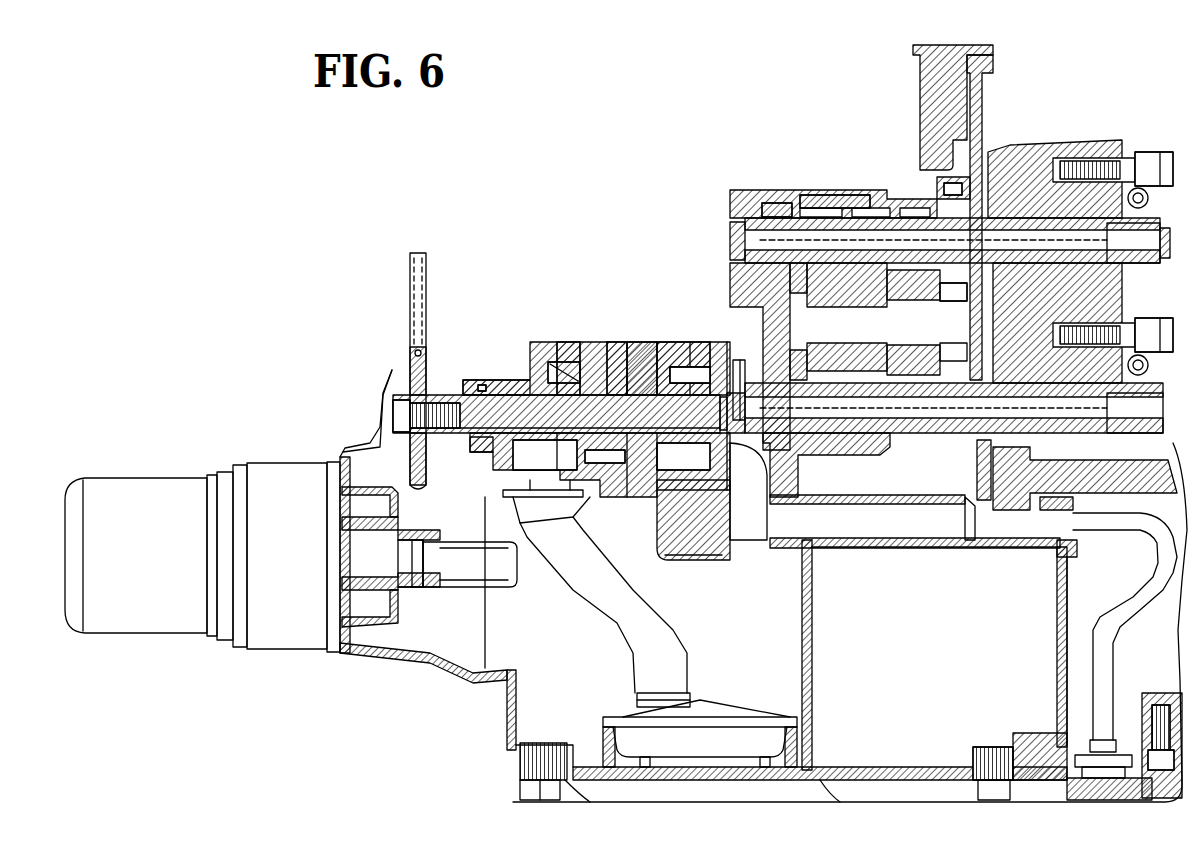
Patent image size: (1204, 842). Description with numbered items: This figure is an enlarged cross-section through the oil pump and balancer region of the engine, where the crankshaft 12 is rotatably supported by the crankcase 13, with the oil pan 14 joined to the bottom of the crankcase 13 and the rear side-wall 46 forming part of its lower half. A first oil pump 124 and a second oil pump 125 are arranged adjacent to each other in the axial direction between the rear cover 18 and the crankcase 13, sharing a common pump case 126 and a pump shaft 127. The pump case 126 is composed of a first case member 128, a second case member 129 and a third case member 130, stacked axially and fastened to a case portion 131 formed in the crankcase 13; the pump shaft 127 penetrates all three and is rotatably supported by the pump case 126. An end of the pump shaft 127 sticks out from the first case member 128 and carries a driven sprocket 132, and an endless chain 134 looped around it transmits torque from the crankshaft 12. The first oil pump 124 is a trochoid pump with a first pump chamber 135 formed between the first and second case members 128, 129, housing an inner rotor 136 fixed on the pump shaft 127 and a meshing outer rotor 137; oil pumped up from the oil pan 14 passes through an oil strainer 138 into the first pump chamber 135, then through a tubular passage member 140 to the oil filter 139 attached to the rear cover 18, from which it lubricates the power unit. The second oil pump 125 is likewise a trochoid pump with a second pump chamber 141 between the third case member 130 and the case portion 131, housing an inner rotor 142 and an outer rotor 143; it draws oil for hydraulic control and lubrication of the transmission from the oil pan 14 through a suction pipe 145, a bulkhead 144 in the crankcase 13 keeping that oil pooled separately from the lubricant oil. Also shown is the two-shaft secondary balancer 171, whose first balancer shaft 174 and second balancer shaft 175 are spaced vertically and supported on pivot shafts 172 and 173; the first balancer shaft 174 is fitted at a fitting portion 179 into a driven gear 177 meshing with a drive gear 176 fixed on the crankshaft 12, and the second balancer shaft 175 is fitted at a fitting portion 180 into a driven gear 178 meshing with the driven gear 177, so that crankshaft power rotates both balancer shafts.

The crankshaft 12 is at (918, 94).
The crankcase 13 is at (797, 600).
The oil pan 14 is at (843, 767).
The rear cover 18 is at (437, 672).
The rear side-wall 46 is at (500, 702).
The first oil pump 124 is at (585, 337).
The second oil pump 125 is at (715, 337).
The pump case 126 is at (688, 565).
The pump shaft 127 is at (502, 387).
The first case member 128 is at (523, 350).
The second case member 129 is at (643, 342).
The third case member 130 is at (716, 566).
The case portion 131 is at (750, 345).
The driven sprocket 132 is at (432, 457).
The endless chain 134 is at (408, 330).
The first pump chamber 135 is at (576, 523).
The inner rotor 136 is at (553, 342).
The outer rotor 137 is at (593, 472).
The oil strainer 138 is at (700, 727).
The oil filter 139 is at (166, 566).
The tubular passage member 140 is at (500, 592).
The second pump chamber 141 is at (780, 494).
The inner rotor 142 is at (655, 342).
The outer rotor 143 is at (687, 343).
The bulkhead 144 is at (813, 662).
The suction pipe 145 is at (1103, 702).
The balancer 171 is at (878, 183).
The pivot shaft 172 is at (784, 200).
The pivot shaft 173 is at (905, 348).
The first balancer shaft 174 is at (822, 195).
The second balancer shaft 175 is at (858, 350).
The drive gear 176 is at (985, 114).
The driven gear 177 is at (1024, 162).
The driven gear 178 is at (980, 492).
The fitting portion 179 is at (930, 190).
The fitting portion 180 is at (937, 464).